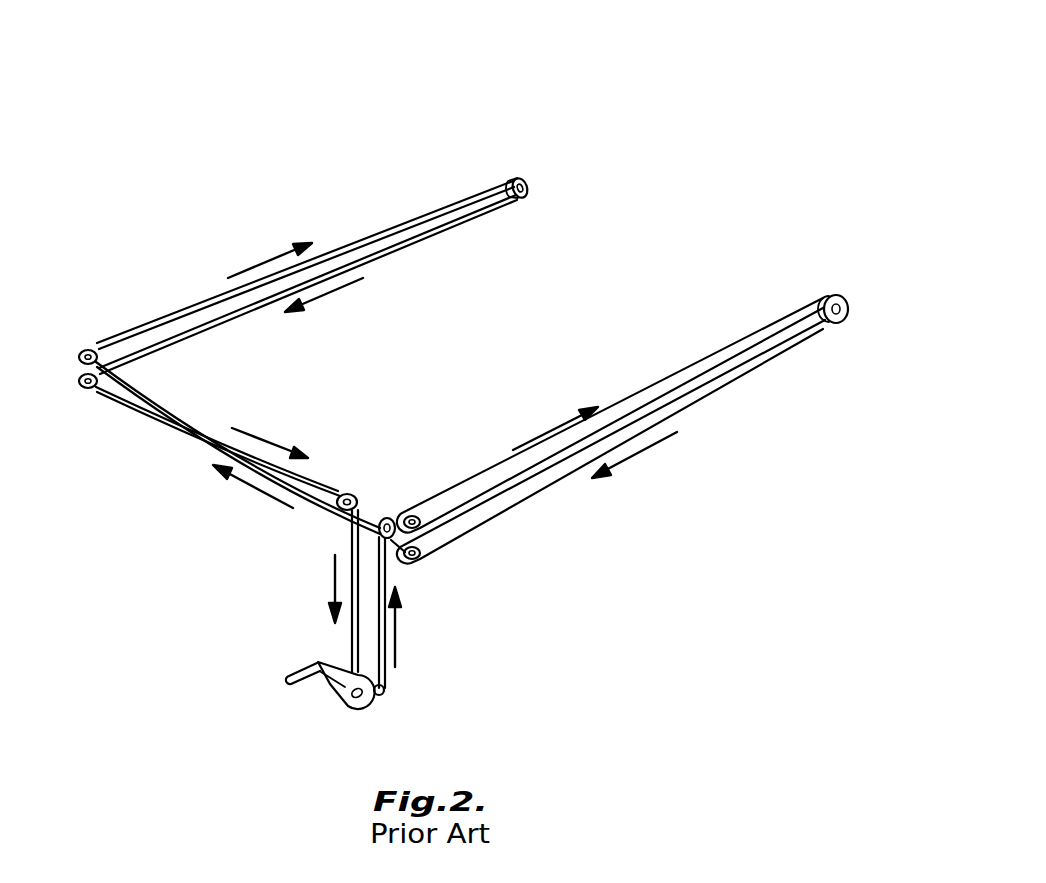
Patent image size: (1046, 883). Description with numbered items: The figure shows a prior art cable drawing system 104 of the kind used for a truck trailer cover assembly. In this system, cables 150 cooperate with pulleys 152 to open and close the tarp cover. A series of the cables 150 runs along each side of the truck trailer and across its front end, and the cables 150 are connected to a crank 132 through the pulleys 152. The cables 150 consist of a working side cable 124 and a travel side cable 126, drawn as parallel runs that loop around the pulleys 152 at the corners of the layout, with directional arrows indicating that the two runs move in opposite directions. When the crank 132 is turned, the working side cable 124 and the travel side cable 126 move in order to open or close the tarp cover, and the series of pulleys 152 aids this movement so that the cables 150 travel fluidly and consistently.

The cable drawing system 104 is at (626, 160).
The working side cable 124 is at (380, 237).
The travel side cable 126 is at (418, 238).
The crank 132 is at (329, 690).
The cables 150 is at (148, 352).
The pulleys 152 is at (84, 352).